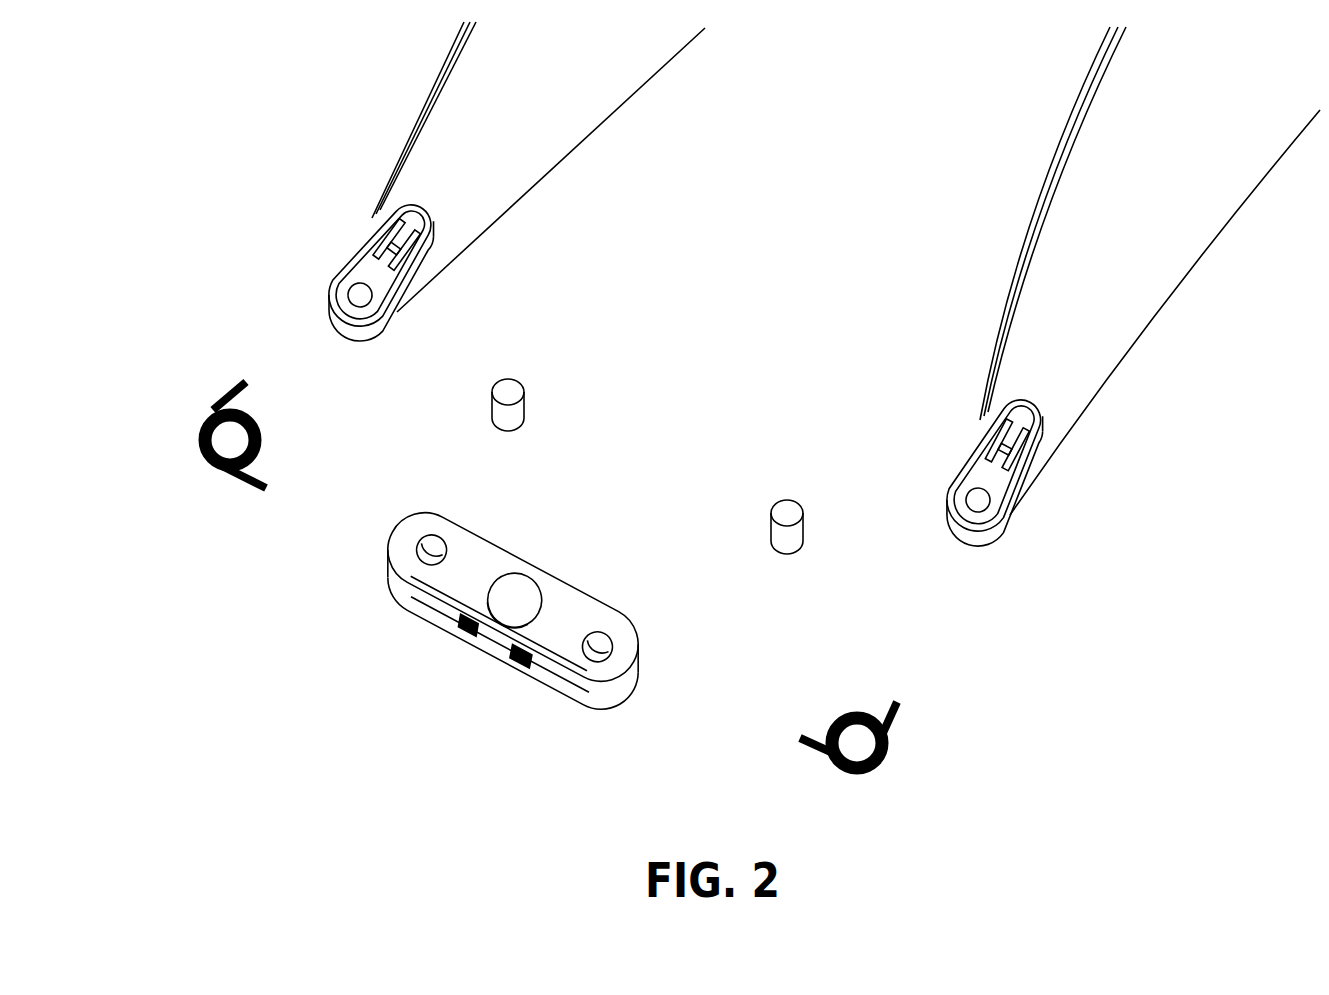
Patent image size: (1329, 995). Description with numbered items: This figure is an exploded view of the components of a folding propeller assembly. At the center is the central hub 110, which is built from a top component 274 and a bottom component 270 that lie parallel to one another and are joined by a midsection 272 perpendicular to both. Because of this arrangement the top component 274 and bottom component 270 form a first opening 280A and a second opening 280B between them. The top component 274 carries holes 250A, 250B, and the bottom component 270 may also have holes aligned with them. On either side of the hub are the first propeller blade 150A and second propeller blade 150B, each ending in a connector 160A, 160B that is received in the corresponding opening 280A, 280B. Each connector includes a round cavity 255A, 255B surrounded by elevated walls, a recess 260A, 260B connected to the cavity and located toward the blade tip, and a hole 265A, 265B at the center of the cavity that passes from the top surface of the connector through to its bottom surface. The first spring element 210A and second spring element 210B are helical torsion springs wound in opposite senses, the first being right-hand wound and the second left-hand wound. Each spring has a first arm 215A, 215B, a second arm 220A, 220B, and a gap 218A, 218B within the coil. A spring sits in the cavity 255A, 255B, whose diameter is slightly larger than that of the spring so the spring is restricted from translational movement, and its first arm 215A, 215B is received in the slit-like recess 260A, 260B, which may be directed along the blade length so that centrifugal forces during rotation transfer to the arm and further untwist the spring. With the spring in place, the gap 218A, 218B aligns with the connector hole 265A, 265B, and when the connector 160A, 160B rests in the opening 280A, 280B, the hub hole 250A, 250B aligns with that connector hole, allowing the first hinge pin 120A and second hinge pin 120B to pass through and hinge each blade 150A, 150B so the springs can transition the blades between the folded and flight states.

The central hub 110 is at (473, 653).
The first hinge pin 120A is at (528, 405).
The second hinge pin 120B is at (775, 493).
The first propeller blade 150A is at (549, 104).
The second propeller blade 150B is at (1217, 164).
The connector of the first propeller blade 160A is at (346, 253).
The connector of the second propeller blade 160B is at (1034, 446).
The first spring element 210A is at (224, 458).
The second spring element 210B is at (870, 701).
The first arm of the first spring element 215A is at (225, 385).
The first arm of the second spring element 215B is at (905, 718).
The gap of the first spring element 218A is at (258, 465).
The gap of the second spring element 218B is at (850, 735).
The second arm of the first spring element 220A is at (243, 480).
The second arm of the second spring element 220B is at (812, 745).
The first hole of the top component 250A is at (418, 548).
The second hole of the top component 250B is at (600, 648).
The cavity of the first connector 255A is at (320, 294).
The cavity of the second connector 255B is at (998, 498).
The recess of the first connector 260A is at (368, 243).
The recess of the second connector 260B is at (1020, 456).
The hole of the first connector 265A is at (400, 328).
The hole of the second connector 265B is at (953, 492).
The bottom component 270 is at (443, 635).
The midsection 272 is at (492, 647).
The top component 274 is at (538, 690).
The first opening 280A is at (410, 603).
The second opening 280B is at (607, 700).